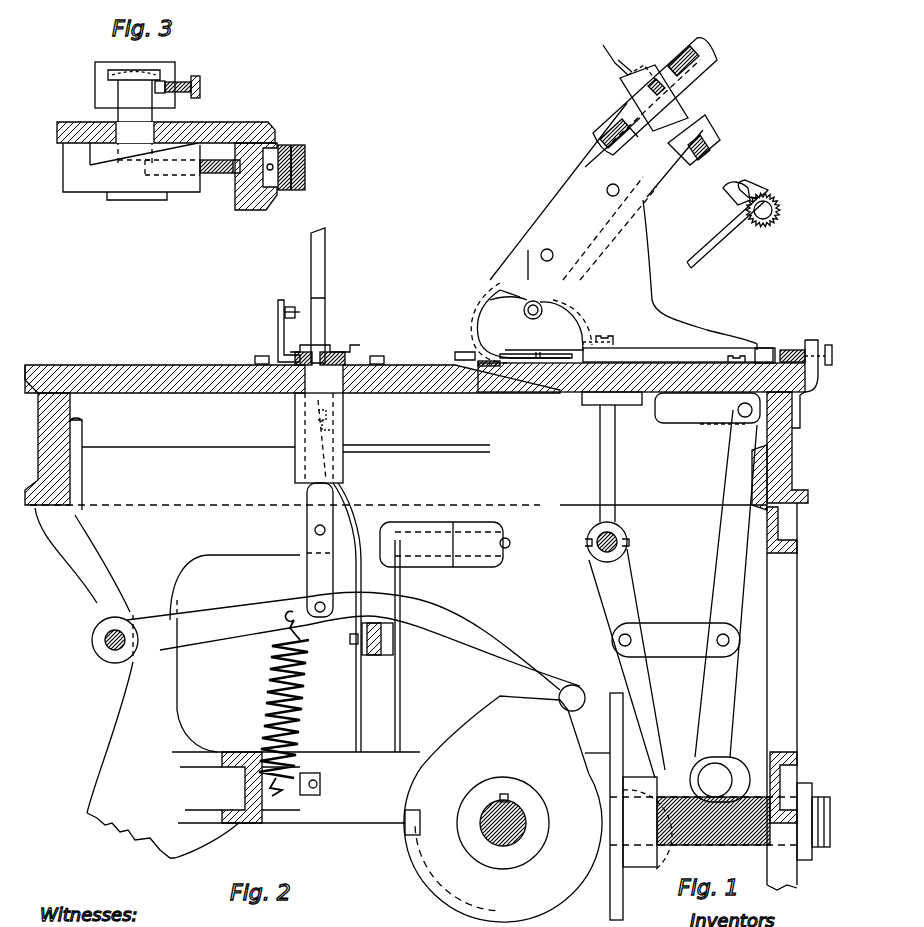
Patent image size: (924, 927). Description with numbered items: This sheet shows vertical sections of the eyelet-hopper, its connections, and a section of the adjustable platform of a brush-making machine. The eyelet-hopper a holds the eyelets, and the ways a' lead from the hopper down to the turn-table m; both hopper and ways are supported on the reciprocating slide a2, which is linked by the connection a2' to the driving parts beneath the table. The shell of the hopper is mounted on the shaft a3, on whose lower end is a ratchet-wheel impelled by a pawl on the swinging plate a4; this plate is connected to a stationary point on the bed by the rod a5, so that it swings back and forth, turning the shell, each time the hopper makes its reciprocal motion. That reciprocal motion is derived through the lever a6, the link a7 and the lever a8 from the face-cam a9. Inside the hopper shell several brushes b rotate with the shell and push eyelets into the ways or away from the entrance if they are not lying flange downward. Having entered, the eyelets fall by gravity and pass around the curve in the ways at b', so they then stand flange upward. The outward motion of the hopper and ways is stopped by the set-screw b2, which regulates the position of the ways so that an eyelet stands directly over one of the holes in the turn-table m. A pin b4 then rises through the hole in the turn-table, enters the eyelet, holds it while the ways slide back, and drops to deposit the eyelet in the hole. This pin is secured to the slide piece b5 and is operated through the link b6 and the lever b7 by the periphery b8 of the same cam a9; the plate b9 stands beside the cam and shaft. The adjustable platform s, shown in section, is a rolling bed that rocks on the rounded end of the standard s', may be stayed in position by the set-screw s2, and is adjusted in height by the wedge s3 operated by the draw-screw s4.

In FIG. 3, the adjustable platform s is at (135, 77).
In FIG. 3, the standard s' is at (135, 122).
In FIG. 3, the set-screw s2 is at (190, 87).
In FIG. 3, the wedge s3 is at (131, 171).
In FIG. 3, the draw-screw s4 is at (220, 159).
In FIG. 1, the eyelet-hopper a is at (655, 92).
In FIG. 1, the ways a' is at (596, 191).
In FIG. 1, the reciprocating slide a2 is at (678, 281).
In FIG. 1, the link a2' is at (707, 408).
In FIG. 1, the shaft a3 is at (645, 88).
In FIG. 1, the swinging plate a4 is at (724, 171).
In FIG. 1, the rod a5 is at (725, 225).
In FIG. 2, the lever a6 is at (354, 617).
In FIG. 1, the lever a6 is at (723, 606).
In FIG. 1, the link a7 is at (676, 640).
In FIG. 2, the lever a8 is at (381, 646).
In FIG. 1, the lever a8 is at (623, 585).
In FIG. 2, the face-cam a9 is at (503, 809).
In FIG. 1, the face-cam a9 is at (720, 818).
In FIG. 2, the brushes b is at (465, 357).
In FIG. 1, the brushes b is at (655, 99).
In FIG. 1, the curve in the ways b' is at (531, 323).
In FIG. 1, the set-screw b2 is at (808, 347).
In FIG. 1, the pin b4 is at (525, 353).
In FIG. 2, the slide piece b5 is at (319, 447).
In FIG. 2, the link b6 is at (320, 550).
In FIG. 2, the lever b7 is at (353, 641).
In FIG. 2, the periphery of the cam b8 is at (539, 696).
In FIG. 1, the plate b9 is at (641, 806).
In FIG. 2, the turn-table m is at (340, 348).